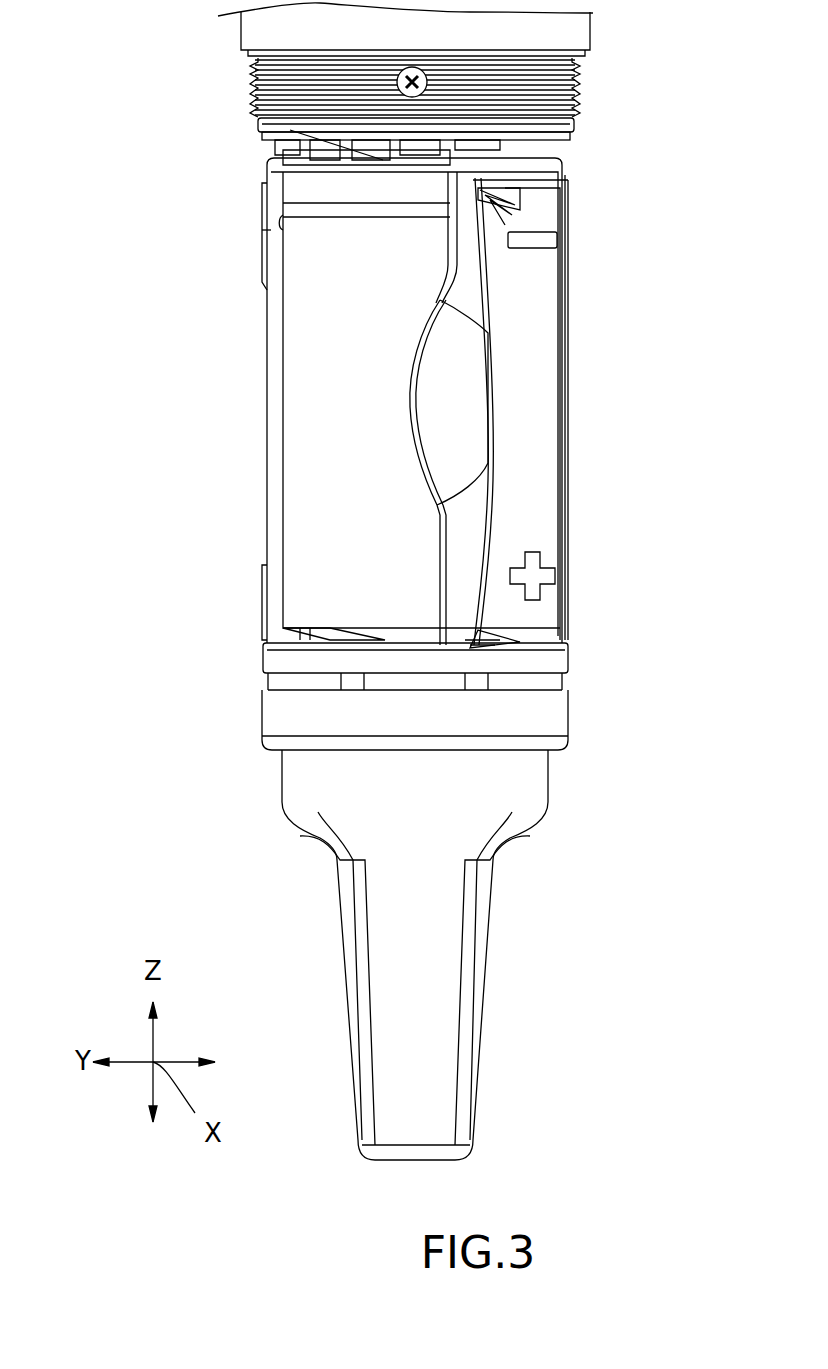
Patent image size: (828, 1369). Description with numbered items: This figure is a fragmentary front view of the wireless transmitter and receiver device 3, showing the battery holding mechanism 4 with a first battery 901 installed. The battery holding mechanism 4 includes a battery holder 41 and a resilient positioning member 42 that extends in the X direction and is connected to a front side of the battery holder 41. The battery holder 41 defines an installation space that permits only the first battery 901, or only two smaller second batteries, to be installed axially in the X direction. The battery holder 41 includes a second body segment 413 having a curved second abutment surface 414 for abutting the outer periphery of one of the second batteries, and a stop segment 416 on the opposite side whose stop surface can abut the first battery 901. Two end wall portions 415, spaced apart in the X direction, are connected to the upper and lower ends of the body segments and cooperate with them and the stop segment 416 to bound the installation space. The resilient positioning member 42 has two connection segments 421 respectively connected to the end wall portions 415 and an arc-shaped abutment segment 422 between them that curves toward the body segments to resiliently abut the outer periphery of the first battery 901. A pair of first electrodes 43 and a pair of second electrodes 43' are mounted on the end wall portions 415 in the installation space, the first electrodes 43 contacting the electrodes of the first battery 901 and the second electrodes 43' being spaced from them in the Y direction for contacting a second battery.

The wireless transmitter and receiver device 3 is at (585, 33).
The battery holding mechanism 4 is at (527, 680).
The battery holder 41 is at (566, 670).
The second body segment 413 is at (556, 455).
The second abutment surface 414 is at (535, 400).
The end wall portions 415 is at (513, 162).
The stop segment 416 is at (280, 225).
The resilient positioning member 42 is at (412, 400).
The connection segments 421 is at (468, 264).
The abutment segment 422 is at (445, 432).
The first electrodes 43 is at (377, 399).
The second electrodes 43' is at (557, 418).
The first battery 901 is at (330, 352).